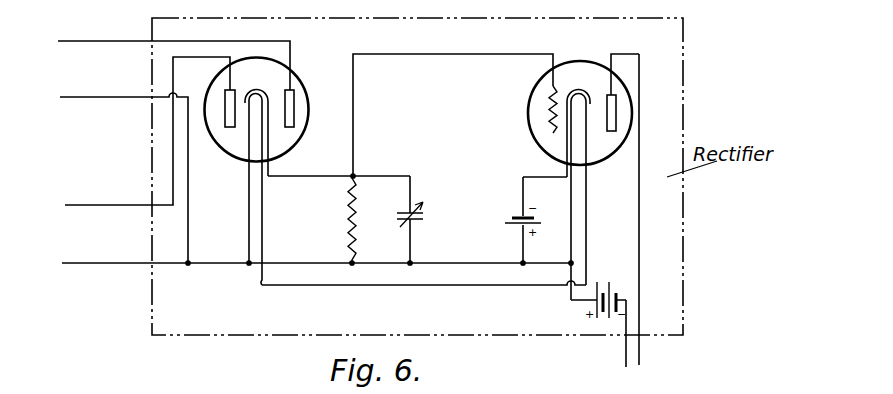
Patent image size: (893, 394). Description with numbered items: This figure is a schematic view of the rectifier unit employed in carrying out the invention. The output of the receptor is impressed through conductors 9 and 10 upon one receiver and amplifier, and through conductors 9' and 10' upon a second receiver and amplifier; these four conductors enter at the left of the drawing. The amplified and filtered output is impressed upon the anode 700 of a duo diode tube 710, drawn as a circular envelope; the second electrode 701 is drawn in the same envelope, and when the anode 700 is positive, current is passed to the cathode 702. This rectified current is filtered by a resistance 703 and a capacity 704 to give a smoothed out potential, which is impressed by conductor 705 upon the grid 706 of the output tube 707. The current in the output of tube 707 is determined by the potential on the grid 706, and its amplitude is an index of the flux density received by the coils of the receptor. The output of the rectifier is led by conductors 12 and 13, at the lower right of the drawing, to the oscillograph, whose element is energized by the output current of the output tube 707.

The conductor 9 is at (174, 55).
The conductor 10 is at (124, 166).
The conductor 9' is at (147, 131).
The conductor 10' is at (317, 247).
The anode 700 is at (294, 102).
The anode (plate) of tube 710 701 is at (223, 98).
The cathode 702 is at (256, 92).
The resistance 703 is at (348, 206).
The capacity 704 is at (432, 219).
The conductor 705 is at (355, 140).
The grid 706 is at (550, 118).
The output tube 707 is at (585, 62).
The duo diode tube 710 is at (293, 73).
The conductor 12 is at (623, 356).
The conductor 13 is at (642, 360).